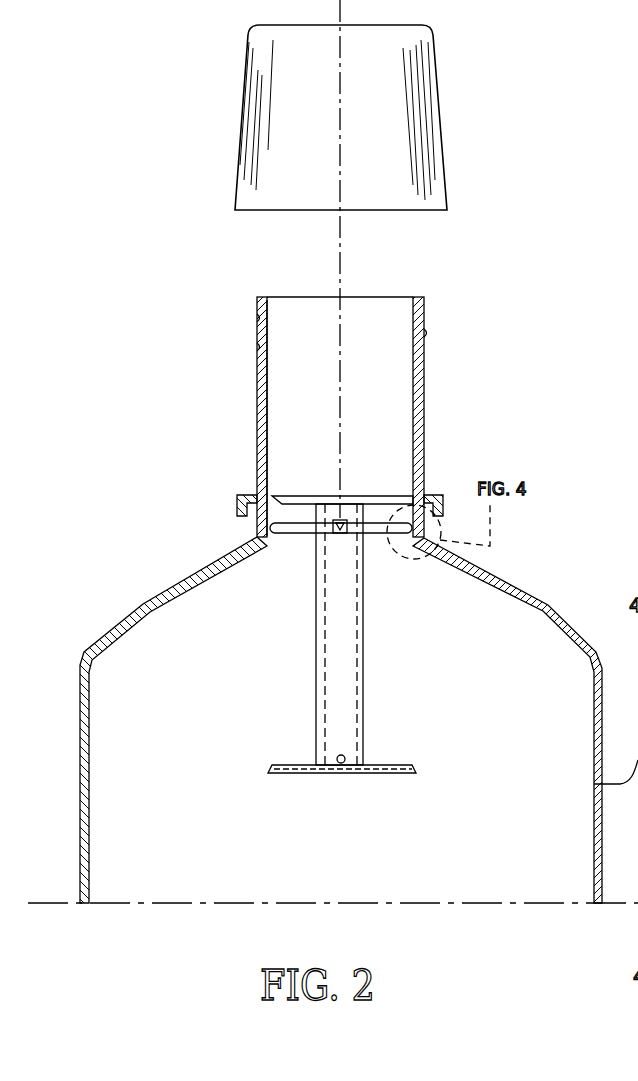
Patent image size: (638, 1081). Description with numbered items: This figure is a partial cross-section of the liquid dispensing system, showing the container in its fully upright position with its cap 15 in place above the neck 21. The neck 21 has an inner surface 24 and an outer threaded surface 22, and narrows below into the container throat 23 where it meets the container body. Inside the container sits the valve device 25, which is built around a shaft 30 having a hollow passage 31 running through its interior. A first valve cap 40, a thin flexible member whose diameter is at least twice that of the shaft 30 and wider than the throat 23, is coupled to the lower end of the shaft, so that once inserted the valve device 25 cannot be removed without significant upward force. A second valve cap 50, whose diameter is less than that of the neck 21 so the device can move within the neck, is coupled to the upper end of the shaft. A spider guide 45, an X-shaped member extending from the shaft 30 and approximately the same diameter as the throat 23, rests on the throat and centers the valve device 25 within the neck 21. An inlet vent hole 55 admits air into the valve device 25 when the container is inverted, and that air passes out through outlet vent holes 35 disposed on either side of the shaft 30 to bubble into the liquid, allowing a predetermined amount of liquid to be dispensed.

The cap 15 is at (438, 113).
The neck 21 is at (424, 373).
The outer threaded surface 22 is at (253, 347).
The container throat 23 is at (268, 538).
The inner surface 24 is at (273, 375).
The valve device 25 is at (372, 617).
The shaft 30 is at (364, 655).
The hollow passage 31 is at (358, 697).
The outlet vent hole 35 is at (341, 754).
The first valve cap 40 is at (306, 774).
The spider guide 45 is at (374, 522).
The second valve cap 50 is at (297, 495).
The inlet vent hole 55 is at (348, 516).